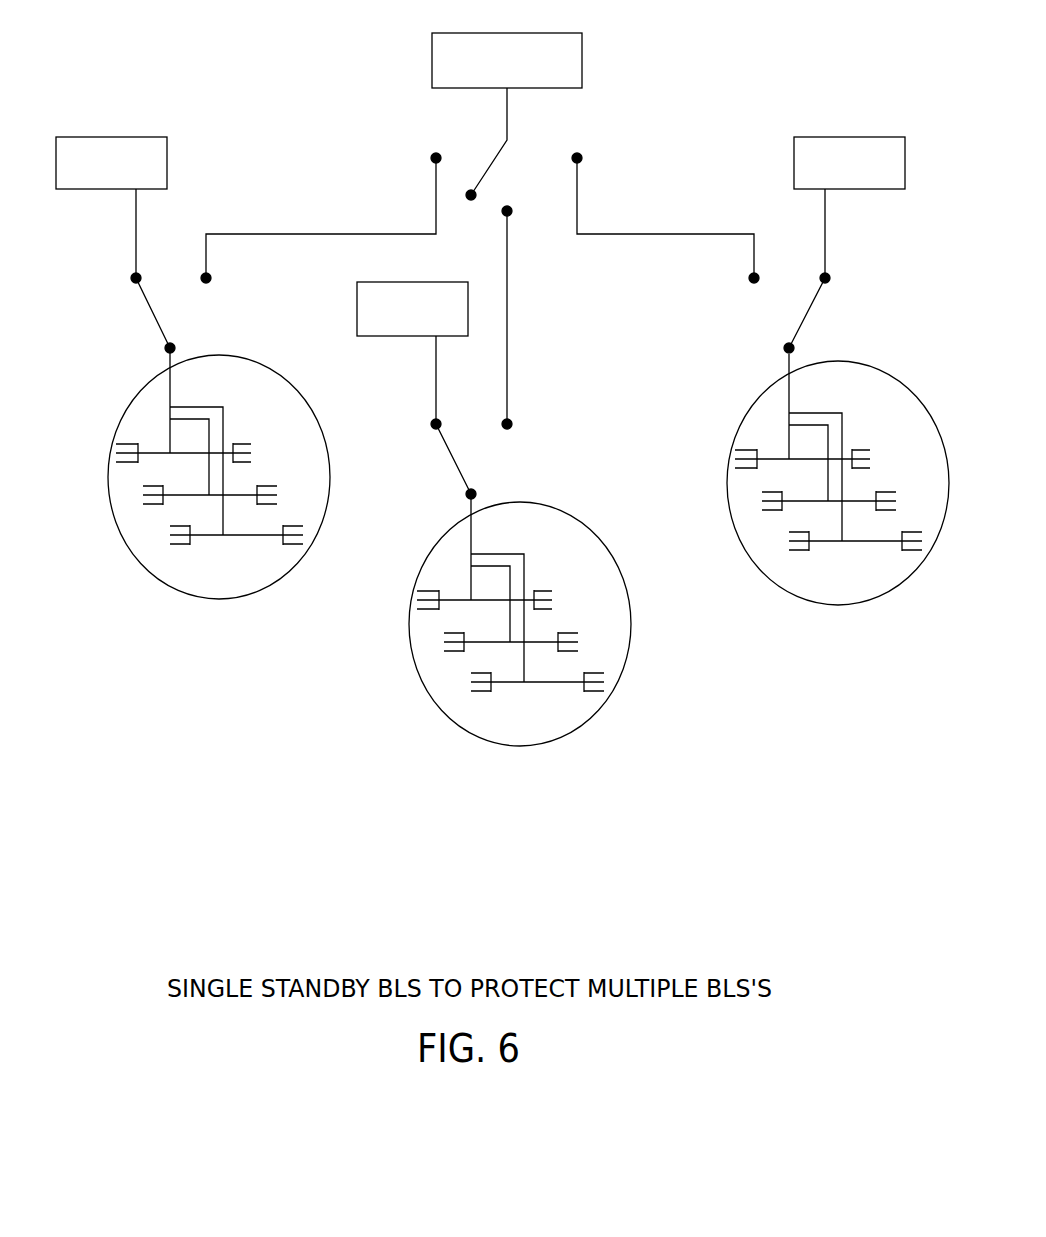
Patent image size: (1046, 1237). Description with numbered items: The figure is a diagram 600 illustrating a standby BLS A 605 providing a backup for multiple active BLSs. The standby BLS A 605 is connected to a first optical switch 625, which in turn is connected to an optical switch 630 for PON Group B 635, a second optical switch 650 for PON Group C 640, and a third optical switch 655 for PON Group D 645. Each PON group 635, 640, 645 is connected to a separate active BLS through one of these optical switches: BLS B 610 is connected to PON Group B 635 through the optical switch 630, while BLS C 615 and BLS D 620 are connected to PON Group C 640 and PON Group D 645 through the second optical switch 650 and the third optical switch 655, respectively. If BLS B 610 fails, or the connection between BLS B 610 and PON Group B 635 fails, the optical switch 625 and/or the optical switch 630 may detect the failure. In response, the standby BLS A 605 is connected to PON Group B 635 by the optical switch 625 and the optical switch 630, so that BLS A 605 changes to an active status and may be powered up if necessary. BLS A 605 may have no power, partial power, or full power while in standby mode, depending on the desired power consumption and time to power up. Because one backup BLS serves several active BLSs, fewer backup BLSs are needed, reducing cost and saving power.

The diagram 600 is at (673, 830).
The standby BLS A 605 is at (432, 62).
The BLS B 610 is at (167, 159).
The BLS C 615 is at (357, 308).
The BLS D 620 is at (794, 160).
The first optical switch 625 is at (492, 156).
The optical switch for PON Group B 630 is at (152, 313).
The PON Group B 635 is at (175, 592).
The PON Group C 640 is at (486, 742).
The PON Group D 645 is at (812, 600).
The second optical switch 650 is at (452, 462).
The third optical switch 655 is at (808, 315).